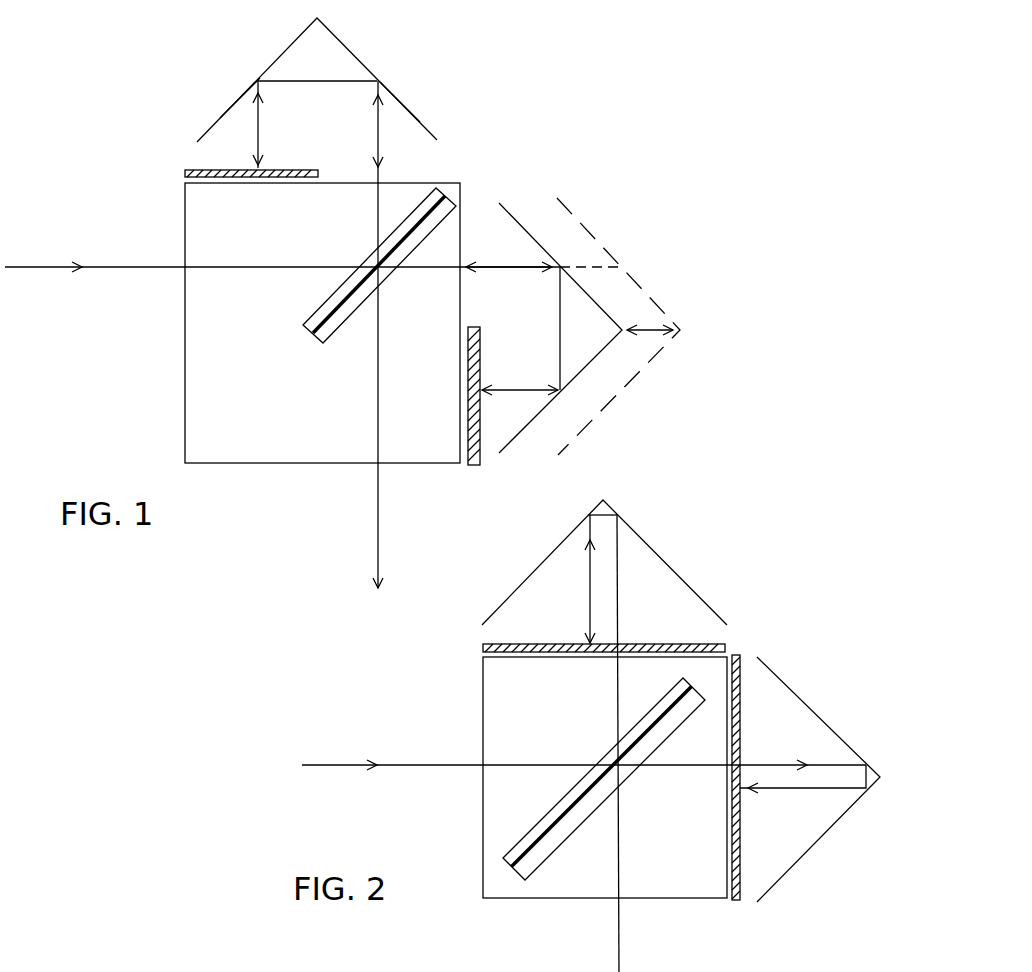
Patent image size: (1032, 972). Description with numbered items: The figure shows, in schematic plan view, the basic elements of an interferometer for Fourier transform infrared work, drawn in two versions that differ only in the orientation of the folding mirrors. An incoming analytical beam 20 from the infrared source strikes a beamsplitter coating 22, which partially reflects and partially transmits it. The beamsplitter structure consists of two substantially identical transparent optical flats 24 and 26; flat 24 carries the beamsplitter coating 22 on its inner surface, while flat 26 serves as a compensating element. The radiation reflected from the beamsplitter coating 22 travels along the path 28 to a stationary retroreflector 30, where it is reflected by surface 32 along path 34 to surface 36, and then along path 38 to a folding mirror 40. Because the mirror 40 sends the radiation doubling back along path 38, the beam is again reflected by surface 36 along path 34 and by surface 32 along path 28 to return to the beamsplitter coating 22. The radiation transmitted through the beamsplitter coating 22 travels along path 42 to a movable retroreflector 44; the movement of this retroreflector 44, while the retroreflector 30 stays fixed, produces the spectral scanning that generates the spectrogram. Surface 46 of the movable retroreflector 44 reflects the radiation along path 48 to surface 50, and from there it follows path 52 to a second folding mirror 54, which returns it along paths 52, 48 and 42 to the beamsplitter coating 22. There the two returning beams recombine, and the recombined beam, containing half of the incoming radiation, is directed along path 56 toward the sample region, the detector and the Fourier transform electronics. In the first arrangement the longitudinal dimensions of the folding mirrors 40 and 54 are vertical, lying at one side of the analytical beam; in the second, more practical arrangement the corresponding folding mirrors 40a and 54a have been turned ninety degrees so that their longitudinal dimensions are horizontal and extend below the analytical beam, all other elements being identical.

In FIG. 1, the incoming analytical beam 20 is at (110, 267).
In FIG. 2, the incoming analytical beam 20 is at (408, 767).
In FIG. 1, the beamsplitter coating 22 is at (344, 290).
In FIG. 2, the beamsplitter coating 22 is at (565, 813).
In FIG. 1, the transparent optical flat 24 is at (315, 317).
In FIG. 1, the transparent optical flat 26 is at (388, 275).
In FIG. 1, the reflected beam path 28 is at (378, 132).
In FIG. 1, the stationary retroreflector 30 is at (373, 55).
In FIG. 2, the stationary retroreflector 30 is at (682, 575).
In FIG. 1, the retroreflector surface 32 is at (403, 105).
In FIG. 1, the radiation path 34 is at (327, 80).
In FIG. 1, the retroreflector surface 36 is at (270, 62).
In FIG. 1, the radiation path 38 is at (258, 142).
In FIG. 1, the folding mirror 40 is at (185, 173).
In FIG. 2, the folding mirror 40a is at (730, 647).
In FIG. 1, the transmitted beam path 42 is at (505, 262).
In FIG. 1, the movable retroreflector 44 is at (533, 227).
In FIG. 2, the movable retroreflector 44 is at (830, 833).
In FIG. 1, the retroreflector surface 46 is at (582, 288).
In FIG. 1, the radiation path 48 is at (562, 342).
In FIG. 1, the retroreflector surface 50 is at (550, 400).
In FIG. 1, the radiation path 52 is at (512, 390).
In FIG. 1, the folding mirror 54 is at (473, 468).
In FIG. 2, the folding mirror 54a is at (735, 900).
In FIG. 1, the output beam path 56 is at (378, 495).
In FIG. 2, the output beam path 56 is at (619, 950).